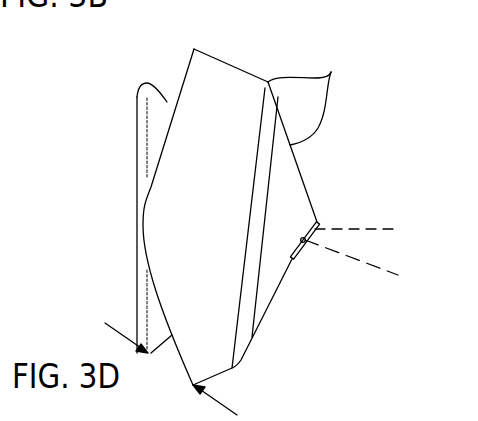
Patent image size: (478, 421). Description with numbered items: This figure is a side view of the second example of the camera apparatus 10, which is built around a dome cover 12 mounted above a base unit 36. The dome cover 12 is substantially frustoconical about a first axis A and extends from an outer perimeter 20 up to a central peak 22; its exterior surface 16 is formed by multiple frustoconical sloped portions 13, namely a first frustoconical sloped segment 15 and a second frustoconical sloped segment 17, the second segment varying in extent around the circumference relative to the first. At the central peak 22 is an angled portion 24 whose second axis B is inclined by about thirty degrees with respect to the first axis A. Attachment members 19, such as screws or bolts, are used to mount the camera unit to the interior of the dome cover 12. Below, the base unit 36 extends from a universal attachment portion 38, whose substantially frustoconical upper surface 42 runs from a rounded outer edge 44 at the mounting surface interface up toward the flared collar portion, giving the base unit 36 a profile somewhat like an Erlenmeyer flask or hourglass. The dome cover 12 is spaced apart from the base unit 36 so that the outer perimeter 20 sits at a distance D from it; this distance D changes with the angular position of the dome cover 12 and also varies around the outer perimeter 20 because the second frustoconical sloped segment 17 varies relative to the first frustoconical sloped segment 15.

The camera apparatus 10 is at (71, 68).
The dome cover 12 is at (158, 217).
The frustoconical sloped portions 13 is at (307, 95).
The first frustoconical sloped segment 15 is at (337, 177).
The exterior surface 16 is at (331, 144).
The second frustoconical sloped segment 17 is at (239, 45).
The attachment members 19 is at (330, 267).
The outer perimeter 20 is at (191, 24).
The central peak 22 is at (341, 227).
The angled portion 24 is at (307, 291).
The base unit 36 is at (133, 201).
The universal attachment portion 38 is at (109, 134).
The frustoconical upper surface 42 is at (154, 64).
The rounded outer edge 44 is at (106, 225).
The first axis A is at (362, 227).
The second axis B is at (361, 261).
The distance D is at (171, 369).